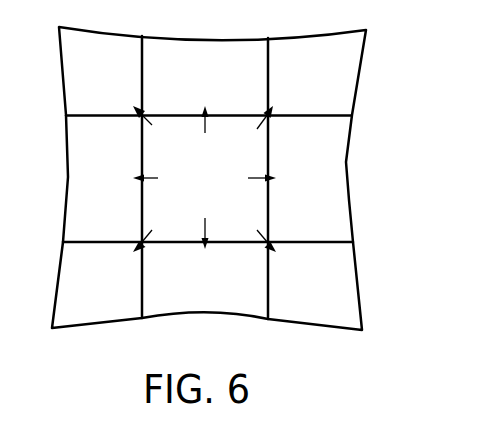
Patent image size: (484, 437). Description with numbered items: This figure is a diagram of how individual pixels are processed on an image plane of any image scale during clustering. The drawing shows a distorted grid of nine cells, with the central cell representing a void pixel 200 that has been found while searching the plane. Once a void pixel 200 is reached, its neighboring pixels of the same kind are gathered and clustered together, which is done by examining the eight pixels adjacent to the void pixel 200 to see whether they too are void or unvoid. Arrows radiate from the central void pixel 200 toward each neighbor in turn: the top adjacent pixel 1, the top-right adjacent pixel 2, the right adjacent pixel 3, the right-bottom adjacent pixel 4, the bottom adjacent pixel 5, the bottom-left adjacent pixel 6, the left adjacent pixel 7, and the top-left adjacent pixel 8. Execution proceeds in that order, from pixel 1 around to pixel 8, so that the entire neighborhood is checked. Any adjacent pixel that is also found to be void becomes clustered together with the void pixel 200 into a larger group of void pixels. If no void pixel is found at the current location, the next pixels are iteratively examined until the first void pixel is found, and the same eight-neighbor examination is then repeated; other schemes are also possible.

The void pixel 200 is at (222, 182).
The top adjacent pixel 1 is at (202, 130).
The top-right adjacent pixel 2 is at (258, 121).
The right adjacent pixel 3 is at (254, 183).
The right-bottom adjacent pixel 4 is at (259, 233).
The bottom adjacent pixel 5 is at (207, 227).
The bottom-left adjacent pixel 6 is at (149, 233).
The left adjacent pixel 7 is at (152, 183).
The top-left adjacent pixel 8 is at (148, 123).